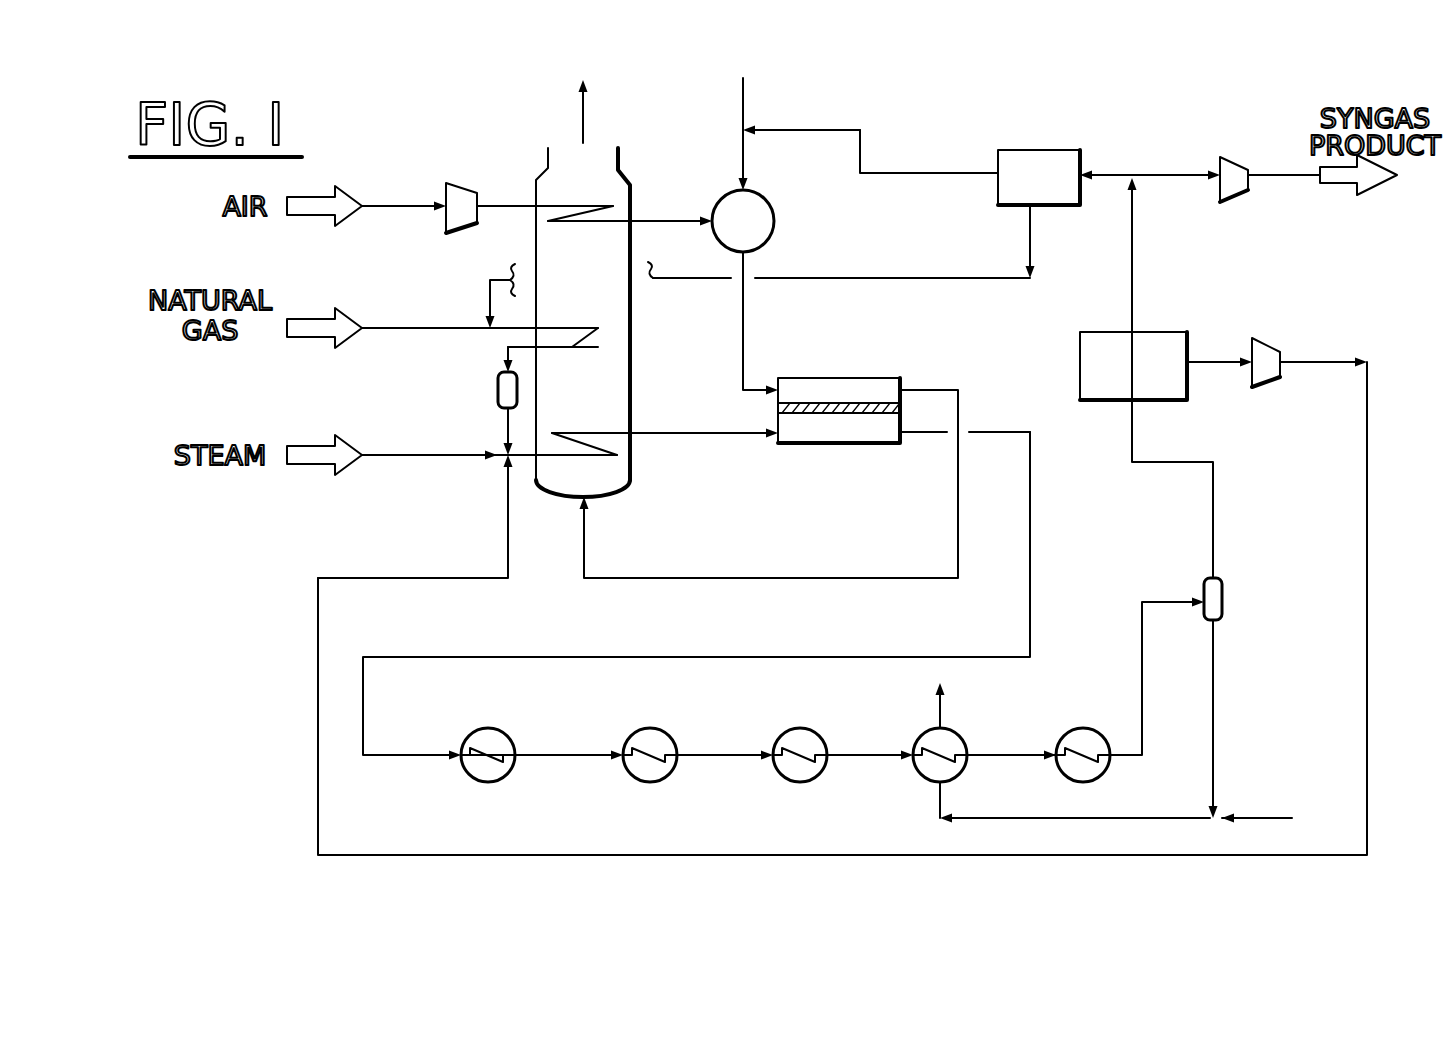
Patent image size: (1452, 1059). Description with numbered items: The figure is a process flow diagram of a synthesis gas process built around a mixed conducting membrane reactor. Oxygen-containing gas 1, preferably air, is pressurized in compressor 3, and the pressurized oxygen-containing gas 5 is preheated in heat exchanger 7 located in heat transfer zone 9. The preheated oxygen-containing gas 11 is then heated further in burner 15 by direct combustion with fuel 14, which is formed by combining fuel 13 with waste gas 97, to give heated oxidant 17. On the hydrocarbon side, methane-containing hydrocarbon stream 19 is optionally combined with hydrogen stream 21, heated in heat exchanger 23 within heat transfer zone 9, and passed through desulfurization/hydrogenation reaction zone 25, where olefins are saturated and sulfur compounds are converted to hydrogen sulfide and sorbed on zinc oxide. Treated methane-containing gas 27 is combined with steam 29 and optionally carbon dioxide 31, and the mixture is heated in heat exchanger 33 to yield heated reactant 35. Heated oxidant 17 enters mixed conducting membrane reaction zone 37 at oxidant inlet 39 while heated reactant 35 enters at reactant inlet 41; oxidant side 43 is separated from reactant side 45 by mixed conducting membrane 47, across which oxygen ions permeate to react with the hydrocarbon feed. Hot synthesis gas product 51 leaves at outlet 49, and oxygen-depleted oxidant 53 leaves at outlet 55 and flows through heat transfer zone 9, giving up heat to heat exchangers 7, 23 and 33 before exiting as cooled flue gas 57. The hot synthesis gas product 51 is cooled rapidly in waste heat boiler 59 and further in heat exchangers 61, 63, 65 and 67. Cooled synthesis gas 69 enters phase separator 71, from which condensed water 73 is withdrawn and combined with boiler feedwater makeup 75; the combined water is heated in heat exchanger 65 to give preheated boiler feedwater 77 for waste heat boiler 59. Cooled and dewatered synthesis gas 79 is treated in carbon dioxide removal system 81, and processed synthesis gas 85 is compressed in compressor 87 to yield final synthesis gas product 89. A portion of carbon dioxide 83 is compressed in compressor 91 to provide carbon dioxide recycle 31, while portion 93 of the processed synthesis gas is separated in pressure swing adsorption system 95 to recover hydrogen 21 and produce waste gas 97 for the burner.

The oxygen-containing gas 1 is at (403, 206).
The compressor 3 is at (461, 180).
The pressurized oxygen-containing gas 5 is at (505, 200).
The heat exchanger 7 is at (585, 221).
The heat transfer zone 9 is at (648, 390).
The preheated oxygen-containing gas 11 is at (676, 212).
The fuel 13 is at (745, 103).
The fuel 14 is at (745, 158).
The burner 15 is at (775, 212).
The heated oxidant 17 is at (743, 310).
The methane-containing hydrocarbon stream 19 is at (426, 330).
The hydrogen stream 21 is at (479, 284).
The heat exchanger 23 is at (577, 330).
The desulfurization/hydrogenation reaction zone 25 is at (497, 390).
The treated methane-containing gas 27 is at (508, 423).
The steam 29 is at (446, 456).
The carbon dioxide 31 is at (508, 536).
The heat exchanger 33 is at (583, 432).
The heated reactant 35 is at (674, 435).
The mixed conducting membrane reaction zone 37 is at (884, 340).
The oxidant inlet 39 is at (742, 392).
The reactant inlet 41 is at (768, 440).
The oxidant side 43 is at (842, 384).
The reactant side 45 is at (815, 432).
The mixed conducting membrane 47 is at (858, 416).
The outlet 49 is at (920, 440).
The hot synthesis gas product 51 is at (1030, 534).
The oxygen-depleted oxidant 53 is at (958, 548).
The outlet 55 is at (930, 390).
The cooled flue gas 57 is at (583, 122).
The waste heat boiler 59 is at (484, 728).
The heat exchanger 61 is at (646, 728).
The heat exchanger 63 is at (798, 728).
The heat exchanger 65 is at (960, 734).
The heat exchanger 67 is at (1094, 730).
The cooled synthesis gas 69 is at (1142, 620).
The phase separator 71 is at (1222, 604).
The condensed water 73 is at (1213, 692).
The boiler feedwater makeup 75 is at (1246, 816).
The preheated boiler feedwater 77 is at (940, 704).
The cooled and dewatered synthesis gas 79 is at (1213, 525).
The carbon dioxide removal system 81 is at (1108, 332).
The carbon dioxide 83 is at (1215, 360).
The processed synthesis gas 85 is at (1132, 237).
The compressor 87 is at (1234, 204).
The final synthesis gas product 89 is at (1292, 182).
The compressor 91 is at (1269, 346).
The portion of synthesis gas 93 is at (1110, 172).
The pressure swing adsorption system 95 is at (1042, 150).
The waste gas 97 is at (928, 173).